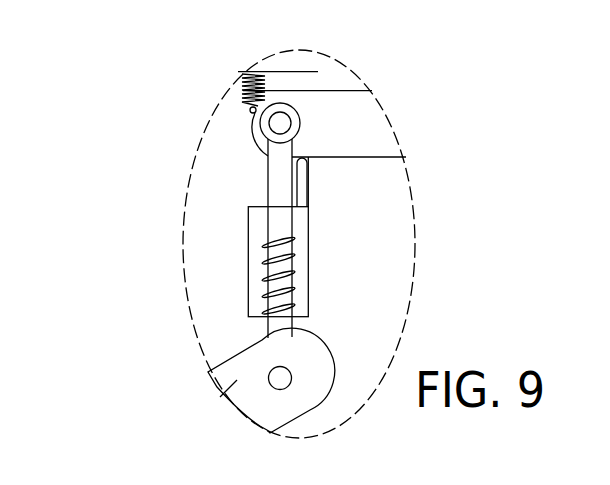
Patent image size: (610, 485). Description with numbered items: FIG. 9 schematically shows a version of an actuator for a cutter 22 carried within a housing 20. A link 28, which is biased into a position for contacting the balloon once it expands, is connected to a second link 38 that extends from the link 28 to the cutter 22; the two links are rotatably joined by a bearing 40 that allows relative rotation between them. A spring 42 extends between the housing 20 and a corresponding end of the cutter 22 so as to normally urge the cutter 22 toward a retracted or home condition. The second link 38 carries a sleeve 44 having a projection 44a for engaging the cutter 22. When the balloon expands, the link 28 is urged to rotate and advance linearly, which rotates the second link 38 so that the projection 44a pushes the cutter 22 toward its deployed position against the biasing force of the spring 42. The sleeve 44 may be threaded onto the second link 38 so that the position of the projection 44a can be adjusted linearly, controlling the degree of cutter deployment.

The housing 20 is at (285, 71).
The cutter 22 is at (382, 140).
The link 28 is at (227, 392).
The second link 38 is at (268, 186).
The bearing 40 is at (305, 103).
The spring 42 is at (243, 72).
The sleeve 44 is at (308, 300).
The projection 44a is at (305, 175).